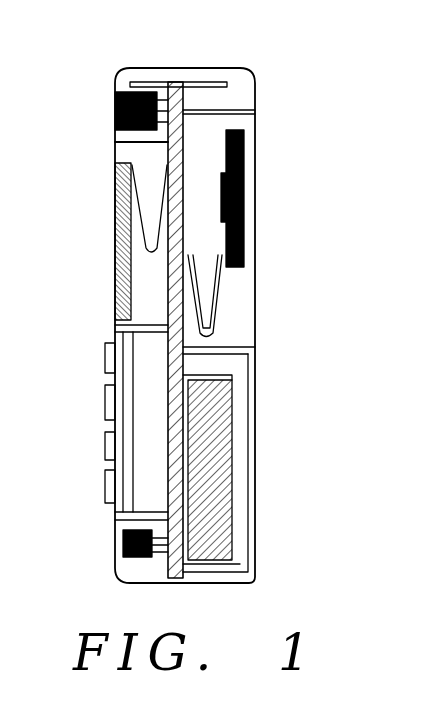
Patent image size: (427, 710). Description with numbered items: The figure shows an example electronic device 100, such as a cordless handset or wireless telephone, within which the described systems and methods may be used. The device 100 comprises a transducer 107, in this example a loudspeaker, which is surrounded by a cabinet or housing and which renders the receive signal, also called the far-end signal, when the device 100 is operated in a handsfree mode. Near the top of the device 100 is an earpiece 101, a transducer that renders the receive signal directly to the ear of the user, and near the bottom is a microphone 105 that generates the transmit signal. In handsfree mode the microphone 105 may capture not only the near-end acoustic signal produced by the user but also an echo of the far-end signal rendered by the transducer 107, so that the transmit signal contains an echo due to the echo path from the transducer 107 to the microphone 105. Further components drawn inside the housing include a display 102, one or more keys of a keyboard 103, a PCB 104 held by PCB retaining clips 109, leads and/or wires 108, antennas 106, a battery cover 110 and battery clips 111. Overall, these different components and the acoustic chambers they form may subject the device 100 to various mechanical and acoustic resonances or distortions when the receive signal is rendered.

The electronic device 100 is at (323, 72).
The earpiece 101 is at (113, 110).
The display 102 is at (115, 220).
The keyboard 103 is at (105, 404).
The PCB 104 is at (167, 463).
The microphone 105 is at (123, 538).
The antennas 106 is at (202, 82).
The transducer 107 is at (245, 190).
The leads and/or wires 108 is at (222, 283).
The PCB retaining clips 109 is at (250, 348).
The battery cover 110 is at (255, 467).
The battery clips 111 is at (232, 374).